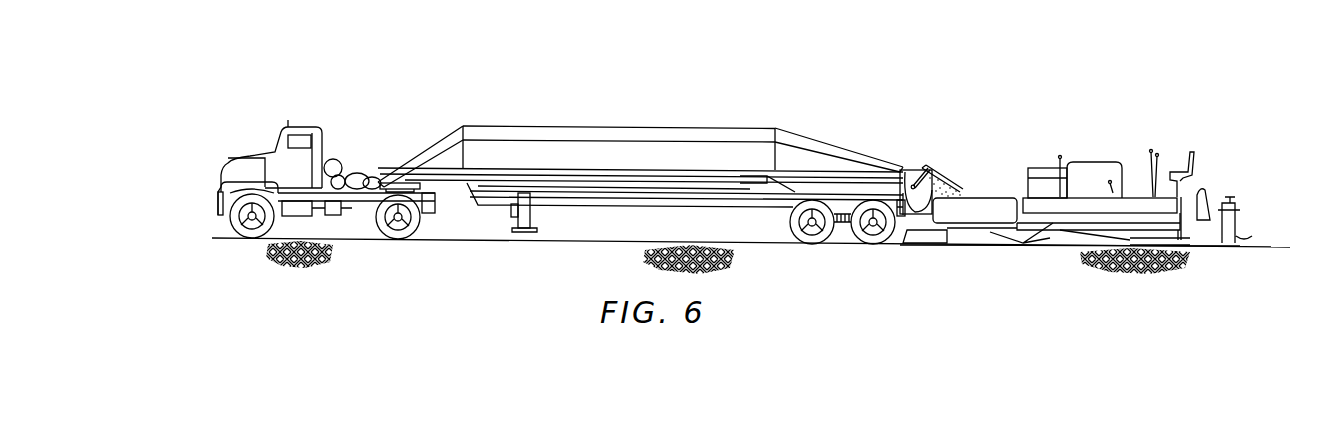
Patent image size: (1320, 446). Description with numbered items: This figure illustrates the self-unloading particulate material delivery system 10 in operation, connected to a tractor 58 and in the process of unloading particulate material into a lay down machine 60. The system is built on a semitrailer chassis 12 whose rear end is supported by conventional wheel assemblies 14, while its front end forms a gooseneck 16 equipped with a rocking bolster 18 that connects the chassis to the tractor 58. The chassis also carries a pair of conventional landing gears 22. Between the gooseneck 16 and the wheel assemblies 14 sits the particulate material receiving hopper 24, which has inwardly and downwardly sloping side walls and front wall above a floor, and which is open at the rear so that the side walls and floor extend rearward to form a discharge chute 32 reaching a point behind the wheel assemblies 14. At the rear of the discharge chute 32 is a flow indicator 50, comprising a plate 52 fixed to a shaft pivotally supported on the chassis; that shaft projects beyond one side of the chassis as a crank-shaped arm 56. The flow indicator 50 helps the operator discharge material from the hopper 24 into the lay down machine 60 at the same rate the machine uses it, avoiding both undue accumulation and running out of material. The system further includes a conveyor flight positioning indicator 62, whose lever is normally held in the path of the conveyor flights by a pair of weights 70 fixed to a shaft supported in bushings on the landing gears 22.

The self-unloading particulate material delivery system 10 is at (633, 176).
The semitrailer chassis 12 is at (651, 202).
The wheel assemblies 14 is at (871, 241).
The gooseneck 16 is at (420, 146).
The rocking bolster 18 is at (413, 190).
The landing gears 22 is at (533, 212).
The particulate material receiving hopper 24 is at (653, 126).
The discharge chute 32 is at (811, 137).
The flow indicator 50 is at (908, 158).
The plate 52 is at (947, 186).
The crank-shaped arm 56 is at (913, 180).
The tractor 58 is at (252, 150).
The lay down machine 60 is at (1076, 157).
The conveyor flight positioning indicator 62 is at (507, 213).
The weights 70 is at (515, 218).